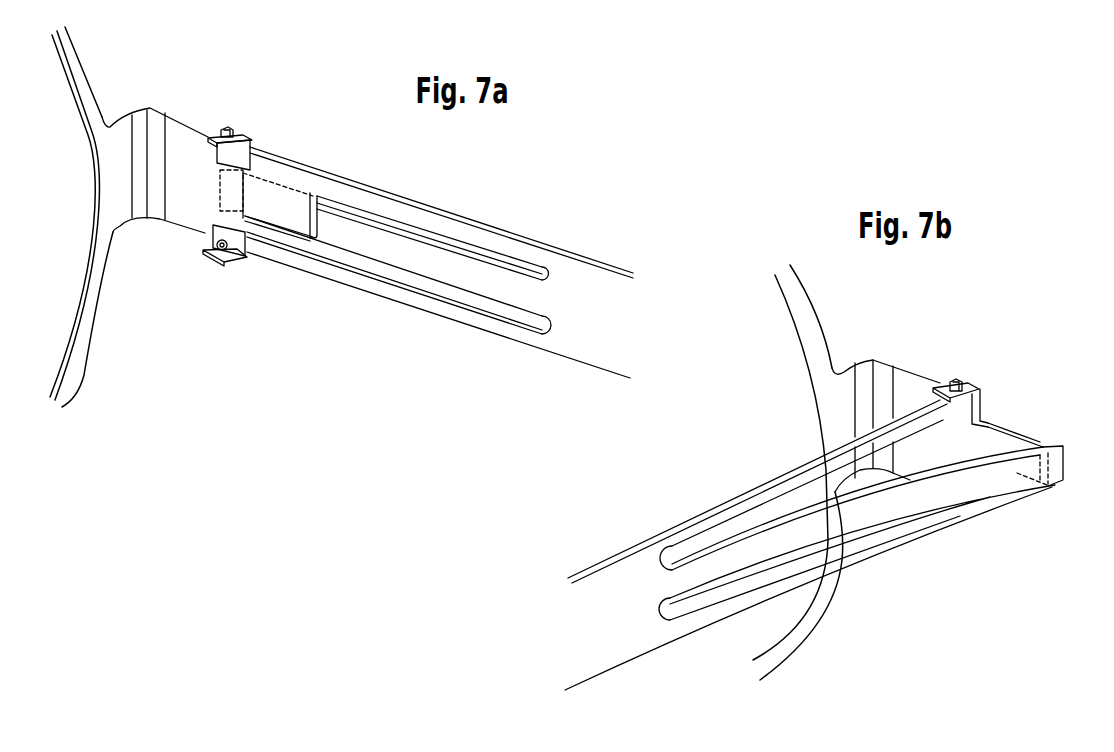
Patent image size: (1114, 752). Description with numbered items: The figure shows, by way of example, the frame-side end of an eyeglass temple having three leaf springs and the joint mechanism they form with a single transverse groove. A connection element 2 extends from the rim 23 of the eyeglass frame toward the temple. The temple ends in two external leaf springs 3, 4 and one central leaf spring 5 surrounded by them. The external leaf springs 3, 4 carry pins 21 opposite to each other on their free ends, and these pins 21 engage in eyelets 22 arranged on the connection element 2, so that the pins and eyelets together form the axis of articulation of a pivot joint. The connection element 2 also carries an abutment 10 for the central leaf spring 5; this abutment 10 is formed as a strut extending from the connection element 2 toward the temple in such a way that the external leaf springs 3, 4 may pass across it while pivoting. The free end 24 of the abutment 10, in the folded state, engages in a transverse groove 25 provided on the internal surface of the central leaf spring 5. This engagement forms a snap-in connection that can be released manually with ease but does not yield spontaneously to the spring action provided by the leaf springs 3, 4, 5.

In FIG. 7A, the connection element 2 is at (158, 118).
In FIG. 7B, the connection element 2 is at (878, 360).
In FIG. 7A, the external leaf spring 3 is at (430, 217).
In FIG. 7B, the external leaf spring 3 is at (772, 493).
In FIG. 7A, the external leaf spring 4 is at (483, 320).
In FIG. 7B, the external leaf spring 4 is at (773, 577).
In FIG. 7A, the central leaf spring 5 is at (418, 260).
In FIG. 7B, the central leaf spring 5 is at (960, 490).
In FIG. 7A, the abutment 10 is at (285, 200).
In FIG. 7B, the abutment 10 is at (988, 438).
In FIG. 7A, the pin 21 is at (222, 126).
In FIG. 7B, the pin 21 is at (955, 383).
In FIG. 7A, the eyelet 22 is at (236, 252).
In FIG. 7A, the rim 23 is at (80, 362).
In FIG. 7A, the free end of the abutment 24 is at (317, 236).
In FIG. 7B, the free end of the abutment 24 is at (1045, 447).
In FIG. 7A, the transverse groove 25 is at (220, 203).
In FIG. 7B, the transverse groove 25 is at (1043, 488).